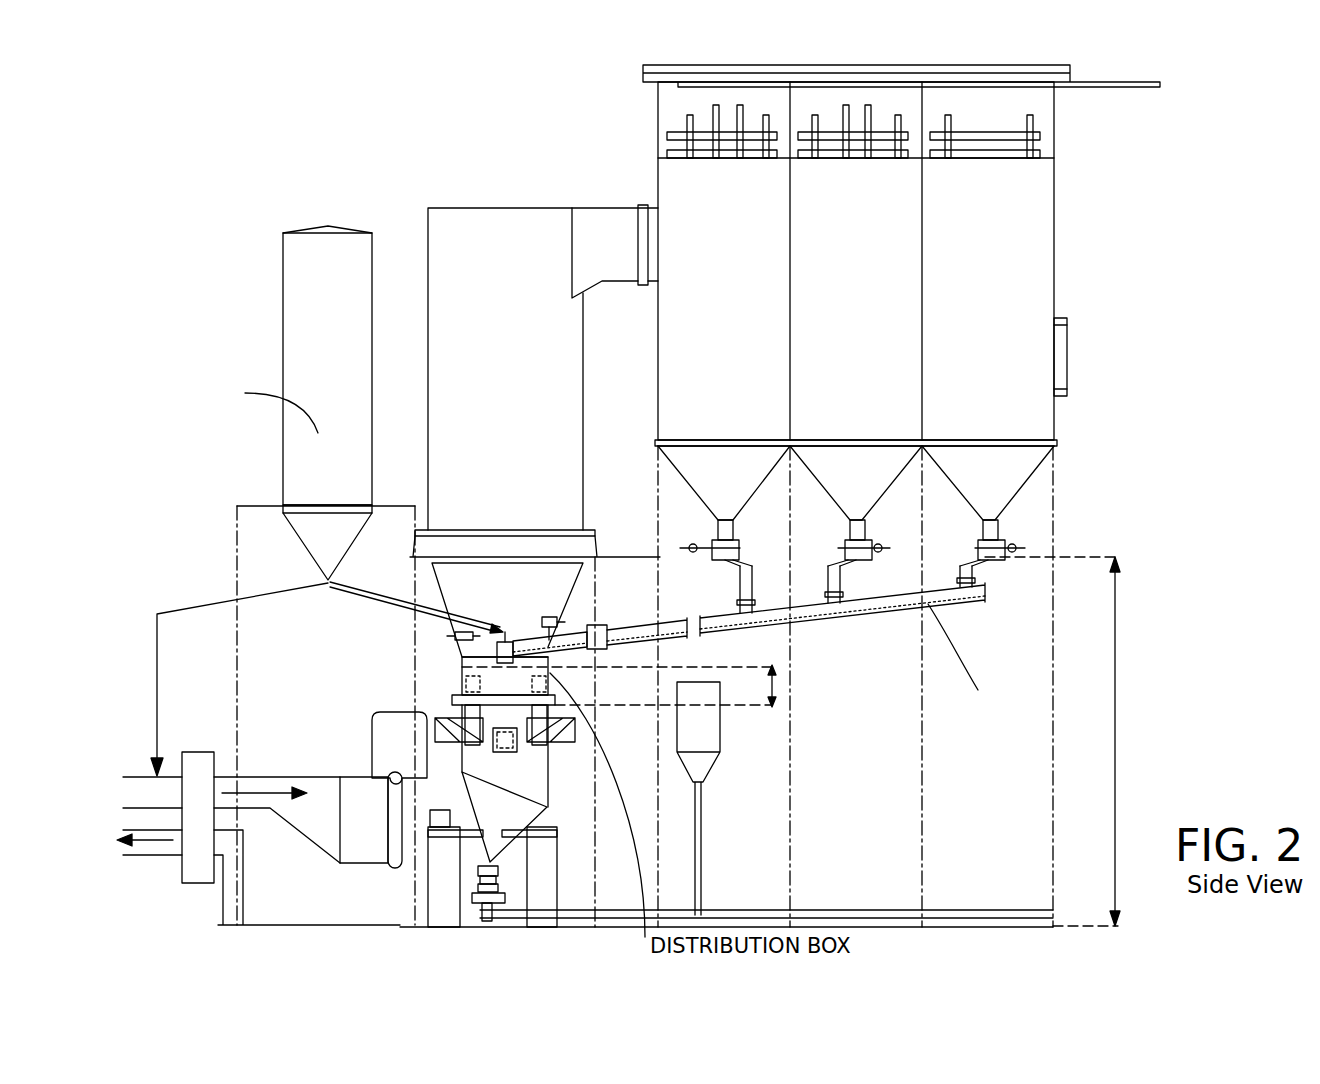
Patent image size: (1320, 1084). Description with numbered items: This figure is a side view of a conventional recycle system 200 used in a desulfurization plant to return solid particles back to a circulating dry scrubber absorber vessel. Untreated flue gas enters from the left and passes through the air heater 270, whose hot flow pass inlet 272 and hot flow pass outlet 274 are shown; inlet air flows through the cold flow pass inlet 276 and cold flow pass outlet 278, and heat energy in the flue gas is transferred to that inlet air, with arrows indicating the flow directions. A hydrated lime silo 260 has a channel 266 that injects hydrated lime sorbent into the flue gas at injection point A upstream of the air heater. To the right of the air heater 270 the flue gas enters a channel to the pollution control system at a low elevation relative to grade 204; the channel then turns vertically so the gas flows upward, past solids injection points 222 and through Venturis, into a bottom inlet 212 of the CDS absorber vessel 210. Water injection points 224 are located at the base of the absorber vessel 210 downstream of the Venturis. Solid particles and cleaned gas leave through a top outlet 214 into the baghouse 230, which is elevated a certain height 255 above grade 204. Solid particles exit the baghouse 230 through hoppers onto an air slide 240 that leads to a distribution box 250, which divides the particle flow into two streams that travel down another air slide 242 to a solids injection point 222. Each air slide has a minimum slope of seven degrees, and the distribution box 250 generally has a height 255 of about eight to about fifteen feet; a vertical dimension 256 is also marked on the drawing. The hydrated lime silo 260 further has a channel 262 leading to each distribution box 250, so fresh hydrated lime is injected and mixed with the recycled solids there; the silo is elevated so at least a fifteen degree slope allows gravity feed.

The recycle system 200 is at (320, 185).
The grade 204 is at (945, 925).
The CDS absorber vessel 210 is at (543, 369).
The bottom inlet 212 is at (521, 583).
The top outlet 214 is at (607, 233).
The solids injection point 222 is at (450, 738).
The water injection point 224 is at (470, 672).
The baghouse 230 is at (901, 292).
The air slide 240 is at (828, 620).
The air slide 242 is at (548, 760).
The distribution box 250 is at (468, 690).
The height 255 is at (778, 686).
The air slide system height 256 is at (1115, 745).
The hydrated lime silo 260 is at (317, 366).
The channel 262 is at (405, 606).
The channel 266 is at (208, 600).
The air heater 270 is at (200, 752).
The hot flow pass inlet 272 is at (138, 777).
The hot flow pass outlet 274 is at (248, 777).
The cold flow pass inlet 276 is at (243, 848).
The cold flow pass outlet 278 is at (145, 855).